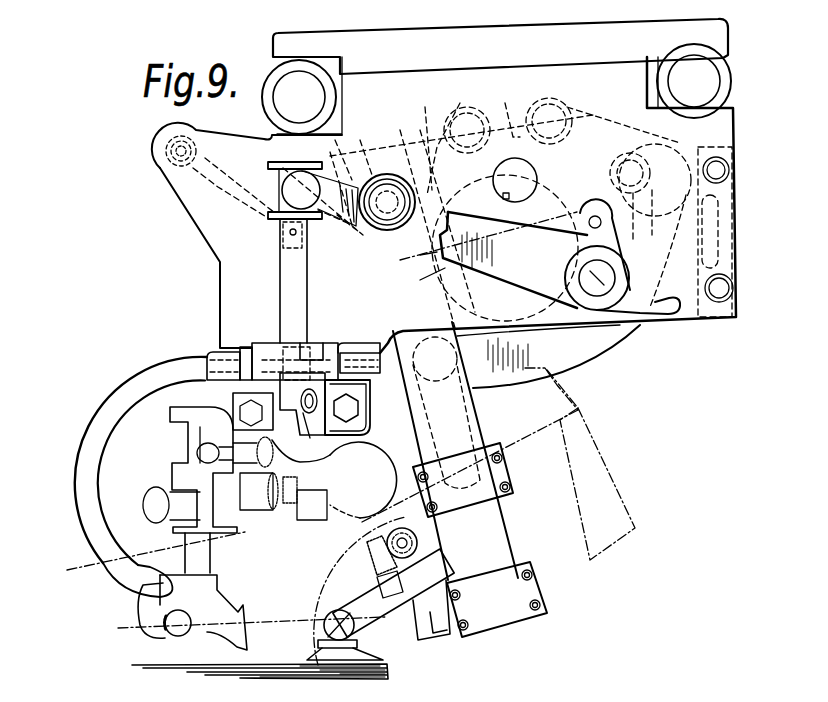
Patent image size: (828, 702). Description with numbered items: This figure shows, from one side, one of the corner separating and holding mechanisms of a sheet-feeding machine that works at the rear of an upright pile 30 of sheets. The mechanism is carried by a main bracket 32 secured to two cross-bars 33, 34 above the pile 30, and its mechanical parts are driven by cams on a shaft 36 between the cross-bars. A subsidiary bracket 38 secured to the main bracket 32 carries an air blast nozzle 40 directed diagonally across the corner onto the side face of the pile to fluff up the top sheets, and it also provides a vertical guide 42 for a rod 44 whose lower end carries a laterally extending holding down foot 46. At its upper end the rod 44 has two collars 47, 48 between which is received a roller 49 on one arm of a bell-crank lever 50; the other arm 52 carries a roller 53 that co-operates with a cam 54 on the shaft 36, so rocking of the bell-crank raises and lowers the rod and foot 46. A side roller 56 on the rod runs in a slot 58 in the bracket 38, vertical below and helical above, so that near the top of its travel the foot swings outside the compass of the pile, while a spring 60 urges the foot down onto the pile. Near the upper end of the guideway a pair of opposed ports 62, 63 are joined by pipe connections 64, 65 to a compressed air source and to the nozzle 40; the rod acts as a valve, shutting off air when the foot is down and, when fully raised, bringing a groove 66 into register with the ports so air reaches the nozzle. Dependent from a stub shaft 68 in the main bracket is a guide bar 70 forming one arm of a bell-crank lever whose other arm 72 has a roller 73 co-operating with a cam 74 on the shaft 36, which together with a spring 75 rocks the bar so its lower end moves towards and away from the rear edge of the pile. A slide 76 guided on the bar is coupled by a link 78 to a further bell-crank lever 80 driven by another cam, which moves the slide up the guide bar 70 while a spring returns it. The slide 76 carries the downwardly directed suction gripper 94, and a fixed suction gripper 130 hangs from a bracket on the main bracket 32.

The pile 30 is at (388, 665).
The main bracket 32 is at (681, 322).
The cross-bar 33 is at (684, 67).
The cross-bar 34 is at (283, 100).
The shaft 36 is at (512, 172).
The subsidiary bracket 38 is at (228, 350).
The air blast nozzle 40 is at (237, 618).
The vertical guide 42 is at (321, 362).
The rod 44 is at (280, 273).
The holding down foot 46 is at (300, 545).
The collar 47 is at (300, 213).
The collar 48 is at (283, 166).
The roller 49 is at (285, 196).
The bell-crank lever 50 is at (335, 165).
The arm 52 is at (637, 233).
The roller 53 is at (659, 214).
The cam 54 is at (623, 144).
The side roller 56 is at (350, 409).
The slot 58 is at (365, 475).
The spring 60 is at (540, 256).
The port 62 is at (318, 406).
The port 63 is at (272, 343).
The pipe connection 64 is at (350, 358).
The pipe connection 65 is at (160, 360).
The groove 66 is at (285, 335).
The stub shaft 68 is at (385, 197).
The guide bar 70 is at (367, 443).
The arm 72 is at (451, 136).
The roller 73 is at (438, 203).
The cam 74 is at (496, 195).
The spring 75 is at (218, 187).
The slide 76 is at (535, 593).
The link 78 is at (478, 392).
The bell-crank lever 80 is at (596, 350).
The suction gripper 94 is at (330, 656).
The fixed suction gripper 130 is at (385, 515).